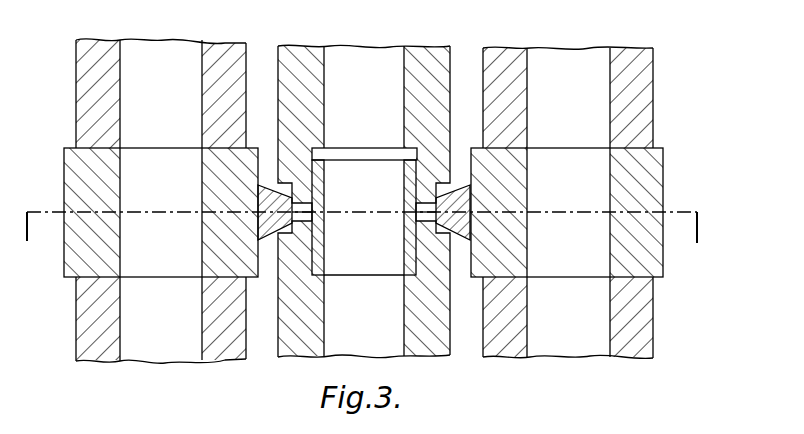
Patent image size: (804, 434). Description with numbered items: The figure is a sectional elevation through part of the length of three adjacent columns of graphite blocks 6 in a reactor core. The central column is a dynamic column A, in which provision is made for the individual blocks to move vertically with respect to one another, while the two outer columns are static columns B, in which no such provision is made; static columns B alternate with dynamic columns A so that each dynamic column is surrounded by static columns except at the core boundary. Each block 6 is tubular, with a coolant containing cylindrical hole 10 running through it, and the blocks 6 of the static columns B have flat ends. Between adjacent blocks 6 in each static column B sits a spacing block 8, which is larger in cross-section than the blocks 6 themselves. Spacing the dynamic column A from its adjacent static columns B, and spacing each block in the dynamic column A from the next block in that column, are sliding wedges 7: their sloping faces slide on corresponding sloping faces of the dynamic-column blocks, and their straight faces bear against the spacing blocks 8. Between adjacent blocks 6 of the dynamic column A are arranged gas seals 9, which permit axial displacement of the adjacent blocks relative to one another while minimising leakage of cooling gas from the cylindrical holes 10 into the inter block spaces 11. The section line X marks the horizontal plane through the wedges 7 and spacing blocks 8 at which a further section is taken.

The graphite block 6 is at (83, 93).
The sliding wedge 7 is at (273, 228).
The spacing block 8 is at (75, 166).
The gas seal 9 is at (418, 160).
The coolant containing cylindrical hole 10 is at (157, 52).
The inter block space 11 is at (259, 62).
The dynamic column A is at (301, 356).
The static column B is at (76, 356).
The section line X is at (363, 215).